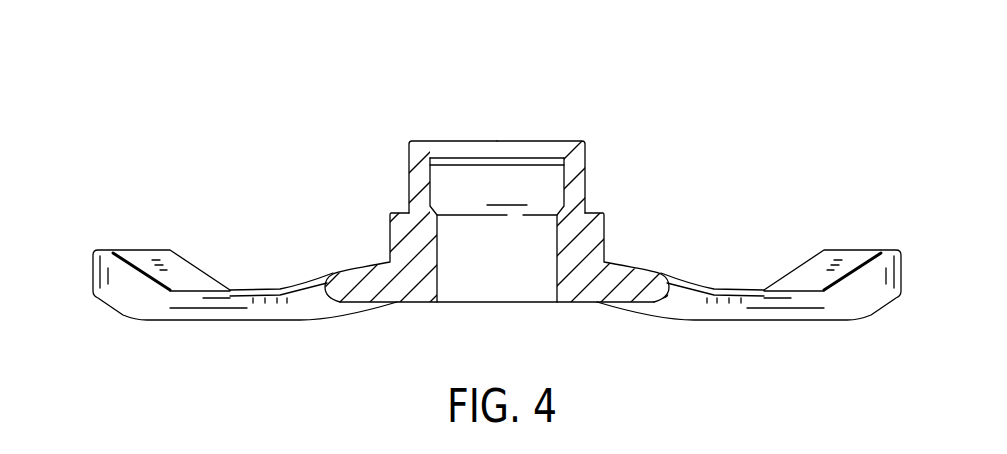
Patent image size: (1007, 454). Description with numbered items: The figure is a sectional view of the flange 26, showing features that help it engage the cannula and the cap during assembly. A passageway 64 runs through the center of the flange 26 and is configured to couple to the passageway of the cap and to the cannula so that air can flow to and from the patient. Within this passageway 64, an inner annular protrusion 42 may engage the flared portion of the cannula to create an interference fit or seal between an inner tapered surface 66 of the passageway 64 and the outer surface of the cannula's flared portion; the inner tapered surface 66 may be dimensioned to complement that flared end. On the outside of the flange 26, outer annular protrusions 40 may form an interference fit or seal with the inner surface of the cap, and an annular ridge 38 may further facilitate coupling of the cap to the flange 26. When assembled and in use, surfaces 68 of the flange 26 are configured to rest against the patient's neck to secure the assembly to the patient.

The flange 26 is at (497, 218).
The annular ridge 38 is at (397, 210).
The outer annular protrusions 40 is at (403, 190).
The inner annular protrusion 42 is at (432, 157).
The passageway 64 is at (498, 170).
The inner tapered surface 66 is at (432, 186).
The surfaces 68 is at (253, 325).